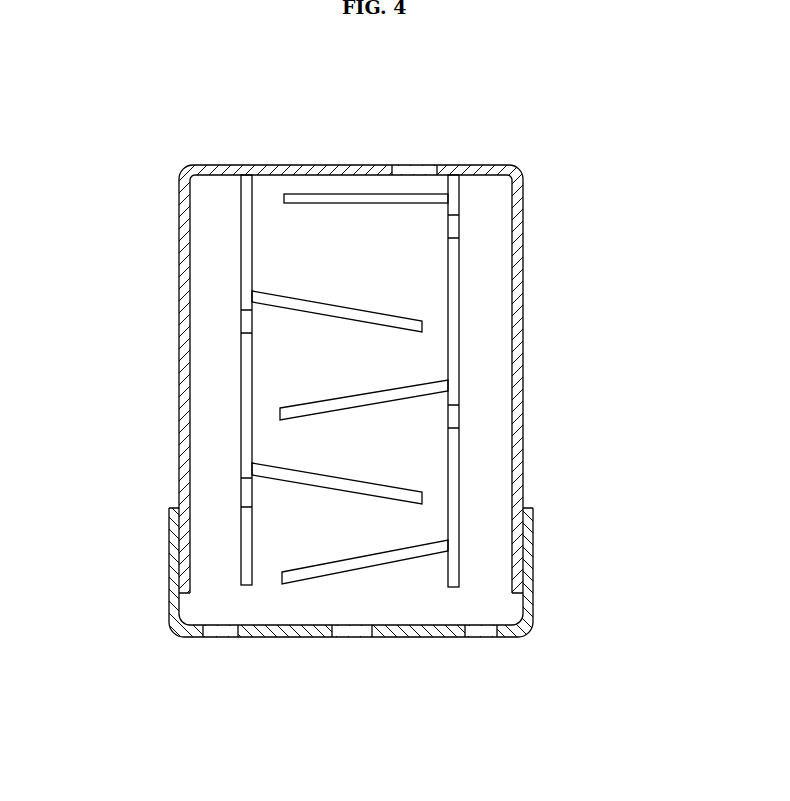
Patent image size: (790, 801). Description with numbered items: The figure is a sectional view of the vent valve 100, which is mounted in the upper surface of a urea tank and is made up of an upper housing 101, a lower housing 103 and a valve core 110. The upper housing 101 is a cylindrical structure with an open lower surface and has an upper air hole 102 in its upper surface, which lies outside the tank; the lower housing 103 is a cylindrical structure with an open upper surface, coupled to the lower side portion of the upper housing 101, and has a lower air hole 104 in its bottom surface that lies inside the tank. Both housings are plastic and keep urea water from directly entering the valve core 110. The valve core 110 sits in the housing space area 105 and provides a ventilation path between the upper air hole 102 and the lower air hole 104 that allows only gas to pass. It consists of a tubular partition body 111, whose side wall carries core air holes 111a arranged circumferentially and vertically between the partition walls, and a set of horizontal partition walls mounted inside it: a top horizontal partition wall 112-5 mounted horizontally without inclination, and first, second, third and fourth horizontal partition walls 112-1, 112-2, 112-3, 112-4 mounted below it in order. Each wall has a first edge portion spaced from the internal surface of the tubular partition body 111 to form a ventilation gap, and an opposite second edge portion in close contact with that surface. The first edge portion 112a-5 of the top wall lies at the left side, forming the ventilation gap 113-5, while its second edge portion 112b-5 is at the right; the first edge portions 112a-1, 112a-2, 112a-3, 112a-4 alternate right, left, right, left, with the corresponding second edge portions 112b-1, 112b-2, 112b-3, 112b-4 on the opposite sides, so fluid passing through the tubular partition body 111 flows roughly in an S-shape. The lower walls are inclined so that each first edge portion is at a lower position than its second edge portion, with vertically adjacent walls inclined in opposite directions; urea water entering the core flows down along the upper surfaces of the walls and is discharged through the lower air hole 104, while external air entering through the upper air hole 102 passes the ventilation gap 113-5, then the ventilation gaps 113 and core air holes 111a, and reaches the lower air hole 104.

The vent valve 100 is at (120, 99).
The upper housing 101 is at (388, 332).
The upper air hole 102 is at (432, 170).
The lower housing 103 is at (423, 611).
The lower air hole 104 is at (484, 630).
The housing space area 105 is at (487, 258).
The valve core 110 is at (351, 385).
The tubular partition body 111 is at (242, 232).
The core air hole 111a is at (455, 418).
The first horizontal partition wall 112-1 is at (337, 310).
The second horizontal partition wall 112-2 is at (345, 403).
The third horizontal partition wall 112-3 is at (358, 484).
The fourth horizontal partition wall 112-4 is at (392, 560).
The top horizontal partition wall 112-5 is at (352, 196).
The first edge portion of the first horizontal partition wall 112a-1 is at (422, 325).
The first edge portion of the second horizontal partition wall 112a-2 is at (280, 413).
The first edge portion of the third horizontal partition wall 112a-3 is at (422, 503).
The first edge portion of the fourth horizontal partition wall 112a-4 is at (282, 583).
The first edge portion of the top horizontal partition wall 112a-5 is at (283, 198).
The second edge portion of the first horizontal partition wall 112b-1 is at (243, 296).
The second edge portion of the second horizontal partition wall 112b-2 is at (448, 383).
The second edge portion of the third horizontal partition wall 112b-3 is at (243, 470).
The second edge portion of the fourth horizontal partition wall 112b-4 is at (450, 548).
The second edge portion of the top horizontal partition wall 112b-5 is at (448, 200).
The ventilation gap 113 is at (265, 580).
The ventilation gap of the top horizontal partition wall 113-5 is at (263, 202).